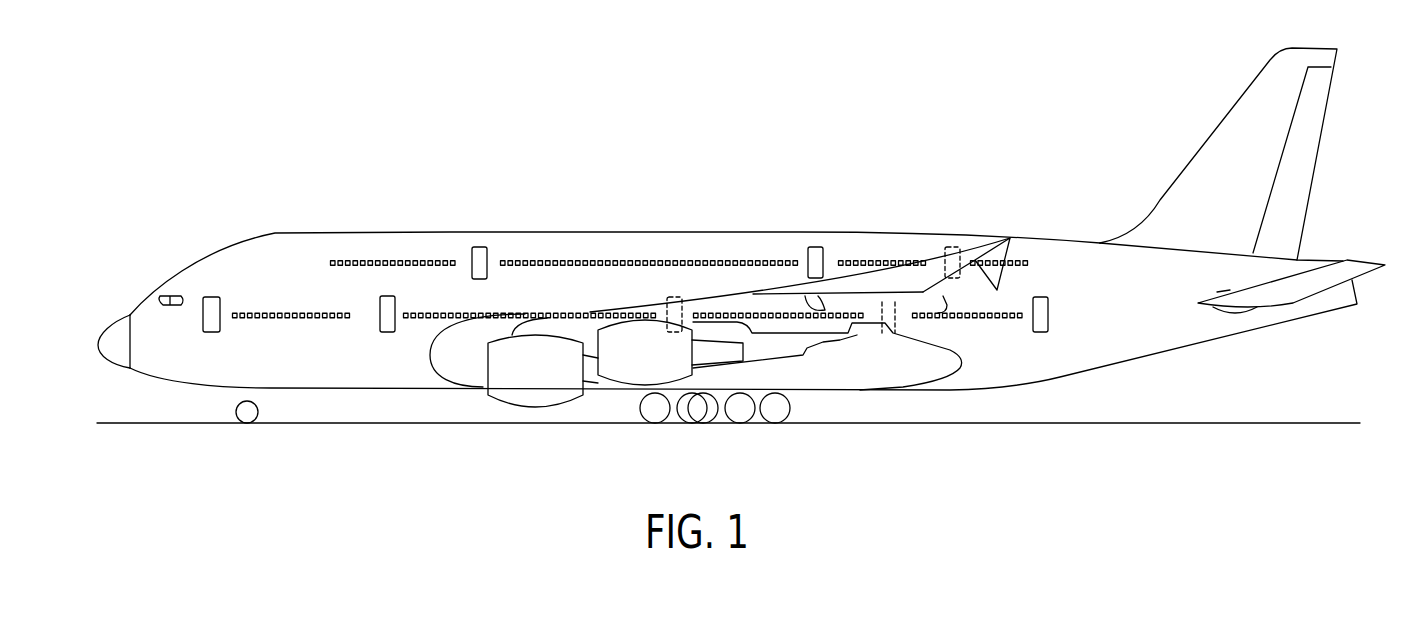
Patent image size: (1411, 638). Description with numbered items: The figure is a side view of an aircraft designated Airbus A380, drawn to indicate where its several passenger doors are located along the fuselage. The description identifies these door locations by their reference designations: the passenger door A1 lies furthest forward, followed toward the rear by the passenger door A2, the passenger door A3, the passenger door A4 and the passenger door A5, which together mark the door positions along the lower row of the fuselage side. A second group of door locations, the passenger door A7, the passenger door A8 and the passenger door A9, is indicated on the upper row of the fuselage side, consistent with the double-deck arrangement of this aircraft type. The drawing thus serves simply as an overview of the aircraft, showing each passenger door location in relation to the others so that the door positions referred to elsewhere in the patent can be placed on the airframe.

The passenger door A1 is at (213, 300).
The passenger door A2 is at (384, 318).
The passenger door A3 is at (668, 301).
The passenger door A4 is at (888, 333).
The passenger door A5 is at (1048, 312).
The passenger door A7 is at (480, 251).
The passenger door A8 is at (815, 251).
The passenger door A9 is at (953, 251).